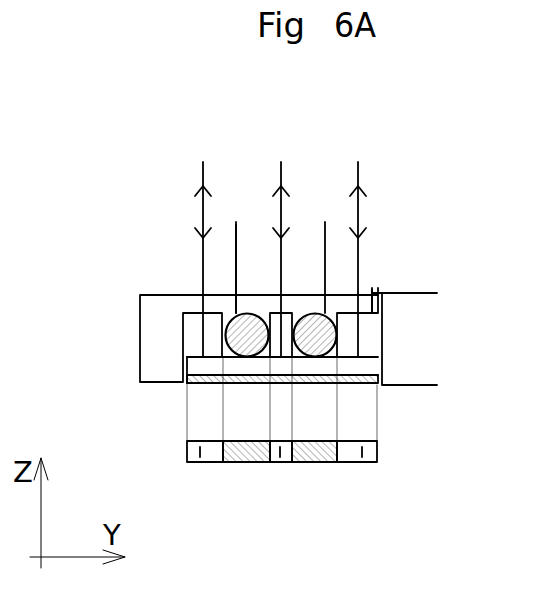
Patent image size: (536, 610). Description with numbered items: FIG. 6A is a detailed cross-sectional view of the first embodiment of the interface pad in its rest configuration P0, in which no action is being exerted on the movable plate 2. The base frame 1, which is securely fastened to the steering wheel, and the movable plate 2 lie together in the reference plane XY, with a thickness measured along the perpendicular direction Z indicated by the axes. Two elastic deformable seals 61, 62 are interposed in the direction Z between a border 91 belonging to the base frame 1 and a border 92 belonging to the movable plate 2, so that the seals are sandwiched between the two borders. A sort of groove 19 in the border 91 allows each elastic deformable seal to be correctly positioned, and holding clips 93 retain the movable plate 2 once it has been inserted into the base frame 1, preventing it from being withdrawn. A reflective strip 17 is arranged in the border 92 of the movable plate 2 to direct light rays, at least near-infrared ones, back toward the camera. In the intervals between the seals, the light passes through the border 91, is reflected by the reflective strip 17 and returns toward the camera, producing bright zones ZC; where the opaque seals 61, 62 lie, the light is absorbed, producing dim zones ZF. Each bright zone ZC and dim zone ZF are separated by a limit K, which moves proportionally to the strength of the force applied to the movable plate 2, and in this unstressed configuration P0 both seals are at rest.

The base frame 1 is at (170, 352).
The movable plate 2 is at (425, 352).
The reflective strip 17 is at (352, 386).
The groove 19 is at (262, 314).
The elastic deformable seal 61 is at (232, 330).
The elastic deformable seal 62 is at (325, 340).
The border 91 is at (367, 305).
The border 92 is at (208, 368).
The holding clip 93 is at (390, 287).
The configuration in the absence of external stress P0 is at (423, 339).
The limit K is at (223, 452).
The dim zone ZF is at (242, 455).
The bright zone ZC is at (200, 455).